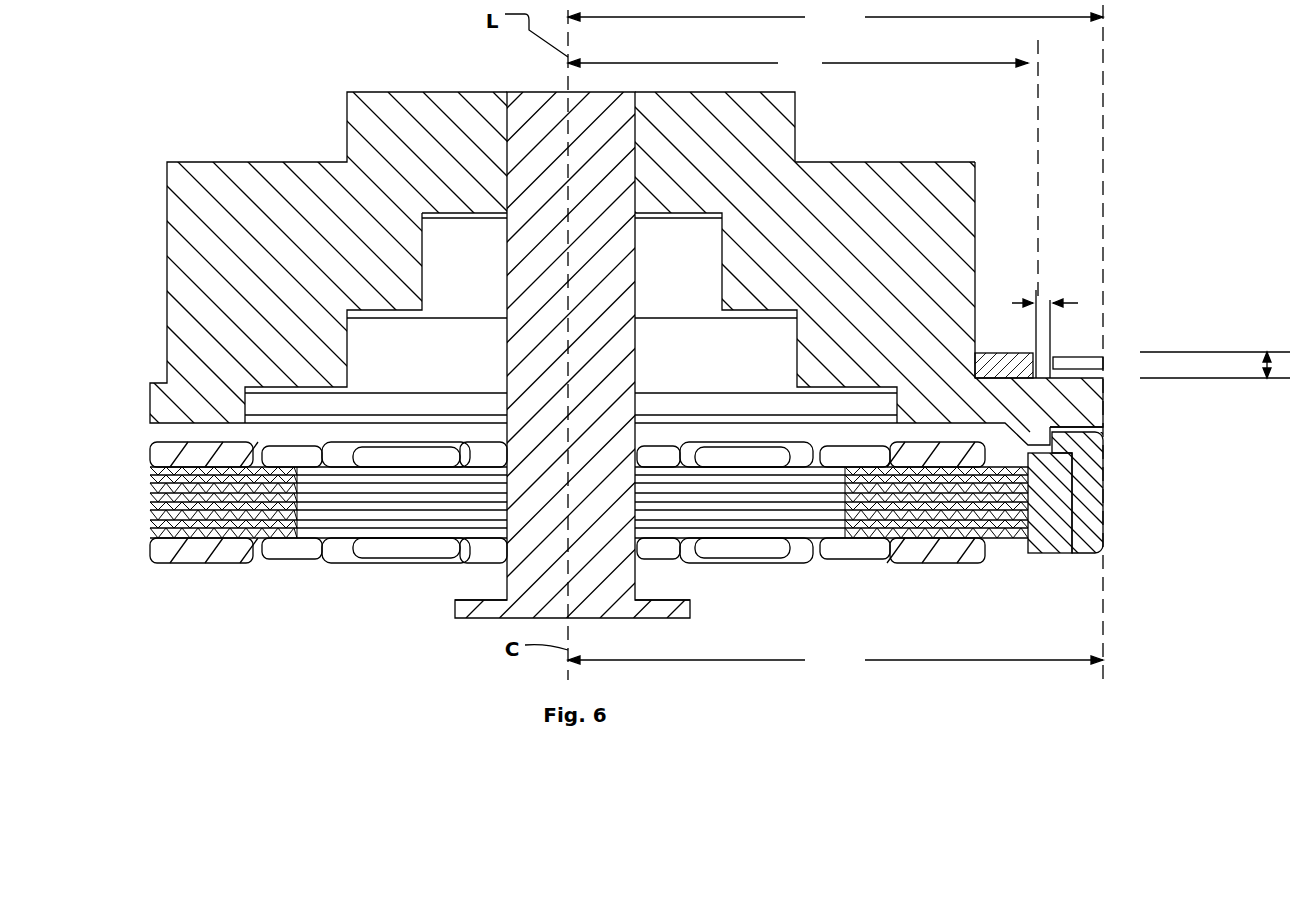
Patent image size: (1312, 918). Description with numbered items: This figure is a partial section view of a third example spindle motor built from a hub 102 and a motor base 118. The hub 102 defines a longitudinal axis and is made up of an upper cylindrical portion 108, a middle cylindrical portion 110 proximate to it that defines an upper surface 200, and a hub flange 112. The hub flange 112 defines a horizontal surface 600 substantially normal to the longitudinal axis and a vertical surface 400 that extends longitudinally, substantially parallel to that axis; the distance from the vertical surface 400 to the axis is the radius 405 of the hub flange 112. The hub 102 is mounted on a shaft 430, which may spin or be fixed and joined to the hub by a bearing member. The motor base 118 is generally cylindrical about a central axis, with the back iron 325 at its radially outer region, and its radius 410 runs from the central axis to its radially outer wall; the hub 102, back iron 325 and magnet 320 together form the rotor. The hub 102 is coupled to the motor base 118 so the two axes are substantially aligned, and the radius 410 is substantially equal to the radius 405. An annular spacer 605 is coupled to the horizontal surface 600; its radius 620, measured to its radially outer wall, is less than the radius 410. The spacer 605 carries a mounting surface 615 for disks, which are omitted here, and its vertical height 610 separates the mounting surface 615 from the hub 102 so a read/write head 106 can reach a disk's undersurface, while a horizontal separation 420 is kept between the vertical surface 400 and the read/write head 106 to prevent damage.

The hub 102 is at (140, 91).
The motor base 118 is at (140, 437).
The upper cylindrical portion 108 is at (783, 95).
The upper surface 200 is at (822, 162).
The middle cylindrical portion 110 is at (968, 182).
The mounting surface 615 is at (985, 353).
The annular spacer 605 is at (1005, 353).
The horizontal surface 600 is at (1048, 300).
The horizontal separation 420 is at (1069, 303).
The read/write head 106 is at (1093, 353).
The vertical height 610 is at (1268, 352).
The hub flange 112 is at (1092, 398).
The vertical surface 400 is at (1103, 425).
The back iron 325 is at (1103, 490).
The magnet 320 is at (1053, 553).
The shaft 430 is at (590, 622).
The radius of the motor base 410 is at (835, 660).
The radius of the hub flange 405 is at (835, 17).
The radius of the spacer 620 is at (798, 63).